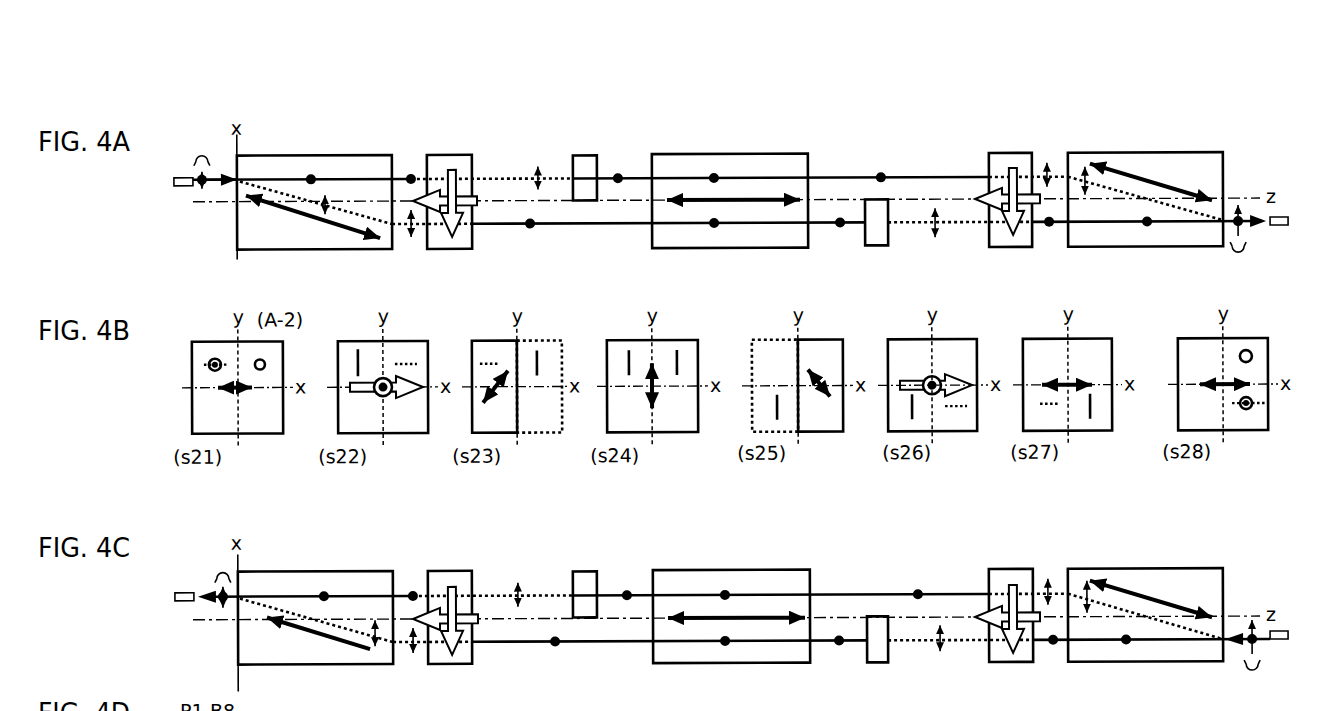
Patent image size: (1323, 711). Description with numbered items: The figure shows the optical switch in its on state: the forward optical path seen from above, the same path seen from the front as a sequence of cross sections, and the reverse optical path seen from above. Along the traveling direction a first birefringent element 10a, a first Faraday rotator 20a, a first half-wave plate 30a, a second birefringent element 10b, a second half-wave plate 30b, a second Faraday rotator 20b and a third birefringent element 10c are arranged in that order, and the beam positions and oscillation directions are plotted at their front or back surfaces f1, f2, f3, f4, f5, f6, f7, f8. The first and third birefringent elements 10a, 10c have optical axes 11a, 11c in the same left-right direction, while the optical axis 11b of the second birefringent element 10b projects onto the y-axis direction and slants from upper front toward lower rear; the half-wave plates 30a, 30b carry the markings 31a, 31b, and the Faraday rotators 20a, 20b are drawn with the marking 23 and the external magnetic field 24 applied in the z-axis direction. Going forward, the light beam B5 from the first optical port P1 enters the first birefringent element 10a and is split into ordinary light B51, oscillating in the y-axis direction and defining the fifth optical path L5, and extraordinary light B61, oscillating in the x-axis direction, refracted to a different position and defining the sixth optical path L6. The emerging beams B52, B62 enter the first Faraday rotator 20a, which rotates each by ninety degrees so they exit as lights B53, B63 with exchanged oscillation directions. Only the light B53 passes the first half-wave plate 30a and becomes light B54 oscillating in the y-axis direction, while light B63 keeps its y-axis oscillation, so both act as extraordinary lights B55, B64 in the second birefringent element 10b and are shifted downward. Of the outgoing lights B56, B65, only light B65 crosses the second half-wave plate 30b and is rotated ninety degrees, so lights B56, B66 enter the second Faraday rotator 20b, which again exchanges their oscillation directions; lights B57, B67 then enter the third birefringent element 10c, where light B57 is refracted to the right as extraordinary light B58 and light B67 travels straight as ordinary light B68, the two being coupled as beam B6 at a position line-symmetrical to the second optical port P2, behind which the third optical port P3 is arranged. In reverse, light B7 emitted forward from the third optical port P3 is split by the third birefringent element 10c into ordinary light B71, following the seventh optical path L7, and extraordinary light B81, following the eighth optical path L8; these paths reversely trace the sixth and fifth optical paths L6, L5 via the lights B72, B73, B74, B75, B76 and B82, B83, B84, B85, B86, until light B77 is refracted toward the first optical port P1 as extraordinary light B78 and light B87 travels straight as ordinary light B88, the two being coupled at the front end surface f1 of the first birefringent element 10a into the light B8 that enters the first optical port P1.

In FIG. 4A, the first birefringent element 10a is at (378, 164).
In FIG. 4B, the first birefringent element 10a is at (277, 433).
In FIG. 4C, the first birefringent element 10a is at (372, 578).
In FIG. 4A, the second birefringent element 10b is at (780, 163).
In FIG. 4B, the second birefringent element 10b is at (683, 433).
In FIG. 4C, the second birefringent element 10b is at (680, 578).
In FIG. 4A, the third birefringent element 10c is at (1144, 163).
In FIG. 4B, the third birefringent element 10c is at (1100, 433).
In FIG. 4C, the third birefringent element 10c is at (1158, 570).
In FIG. 4A, the optical axis of first birefringent element 11a is at (357, 240).
In FIG. 4B, the optical axis of first birefringent element 11a is at (246, 389).
In FIG. 4C, the optical axis of first birefringent element 11a is at (355, 650).
In FIG. 4A, the optical axis of second birefringent element 11b is at (748, 198).
In FIG. 4B, the optical axis of second birefringent element 11b is at (655, 397).
In FIG. 4C, the optical axis of second birefringent element 11b is at (700, 622).
In FIG. 4A, the optical axis of third birefringent element 11c is at (1180, 188).
In FIG. 4B, the optical axis of third birefringent element 11c is at (1072, 382).
In FIG. 4C, the optical axis of third birefringent element 11c is at (1100, 583).
In FIG. 4A, the first Faraday rotator 20a is at (463, 246).
In FIG. 4B, the first Faraday rotator 20a is at (417, 433).
In FIG. 4C, the first Faraday rotator 20a is at (463, 664).
In FIG. 4A, the second Faraday rotator 20b is at (1020, 246).
In FIG. 4B, the second Faraday rotator 20b is at (975, 433).
In FIG. 4C, the second Faraday rotator 20b is at (1000, 664).
In FIG. 4A, the magnetic field direction 23 is at (453, 168).
In FIG. 4B, the magnetic field direction 23 is at (398, 393).
In FIG. 4C, the magnetic field direction 23 is at (452, 585).
In FIG. 4A, the external magnetic field 24 is at (432, 196).
In FIG. 4B, the external magnetic field 24 is at (380, 376).
In FIG. 4C, the external magnetic field 24 is at (432, 612).
In FIG. 4A, the first half-wave plate 30a is at (588, 160).
In FIG. 4B, the first half-wave plate 30a is at (512, 433).
In FIG. 4C, the first half-wave plate 30a is at (587, 575).
In FIG. 4A, the second half-wave plate 30b is at (880, 208).
In FIG. 4B, the second half-wave plate 30b is at (838, 433).
In FIG. 4C, the second half-wave plate 30b is at (874, 615).
In FIG. 4B, the optical axis of first half-wave plate 31a is at (500, 366).
In FIG. 4B, the optical axis of second half-wave plate 31b is at (824, 378).
In FIG. 4A, the first optical port P1 is at (183, 186).
In FIG. 4B, the first optical port P1 is at (212, 360).
In FIG. 4C, the first optical port P1 is at (185, 590).
In FIG. 4B, the second optical port P2 is at (1248, 352).
In FIG. 4A, the third optical port P3 is at (1279, 229).
In FIG. 4B, the third optical port P3 is at (1250, 412).
In FIG. 4C, the third optical port P3 is at (1280, 632).
In FIG. 4A, the front end surface of first birefringent element f1 is at (236, 236).
In FIG. 4B, the front end surface of first birefringent element f1 is at (222, 420).
In FIG. 4C, the front end surface of first birefringent element f1 is at (236, 650).
In FIG. 4A, the surface of optical component f2 is at (426, 163).
In FIG. 4B, the surface of optical component f2 is at (368, 422).
In FIG. 4C, the surface of optical component f2 is at (427, 578).
In FIG. 4A, the surface of optical component f3 is at (572, 165).
In FIG. 4B, the surface of optical component f3 is at (483, 415).
In FIG. 4C, the surface of optical component f3 is at (572, 580).
In FIG. 4A, the surface of optical component f4 is at (651, 165).
In FIG. 4B, the surface of optical component f4 is at (620, 415).
In FIG. 4C, the surface of optical component f4 is at (652, 650).
In FIG. 4A, the surface of optical component f5 is at (864, 233).
In FIG. 4B, the surface of optical component f5 is at (825, 345).
In FIG. 4C, the surface of optical component f5 is at (866, 655).
In FIG. 4A, the surface of optical component f6 is at (988, 233).
In FIG. 4B, the surface of optical component f6 is at (905, 345).
In FIG. 4C, the surface of optical component f6 is at (988, 578).
In FIG. 4A, the surface of optical component f7 is at (1067, 165).
In FIG. 4B, the surface of optical component f7 is at (1048, 347).
In FIG. 4C, the surface of optical component f7 is at (1067, 578).
In FIG. 4A, the surface of optical component f8 is at (1224, 165).
In FIG. 4B, the surface of optical component f8 is at (1190, 405).
In FIG. 4C, the surface of optical component f8 is at (1224, 578).
In FIG. 4A, the fifth optical path L5 is at (502, 176).
In FIG. 4A, the sixth optical path L6 is at (580, 226).
In FIG. 4C, the seventh optical path L7 is at (580, 643).
In FIG. 4C, the eighth optical path L8 is at (500, 592).
In FIG. 4A, the light beam B5 is at (200, 156).
In FIG. 4B, the light beam B5 is at (215, 358).
In FIG. 4A, the light beam B6 is at (1238, 254).
In FIG. 4B, the light beam B6 is at (1260, 405).
In FIG. 4C, the light beam B7 is at (1252, 672).
In FIG. 4C, the coupled light B8 is at (221, 572).
In FIG. 4A, the ordinary light B51 is at (311, 173).
In FIG. 4A, the light beam B52 is at (411, 173).
In FIG. 4B, the light beam B52 is at (357, 358).
In FIG. 4A, the light B53 is at (538, 165).
In FIG. 4B, the light B53 is at (482, 360).
In FIG. 4A, the light B54 is at (618, 173).
In FIG. 4B, the light B54 is at (628, 352).
In FIG. 4A, the extraordinary light B55 is at (714, 173).
In FIG. 4A, the light B56 is at (881, 173).
In FIG. 4B, the light B56 is at (777, 396).
In FIG. 4A, the light B57 is at (1047, 163).
In FIG. 4B, the light B57 is at (1040, 405).
In FIG. 4A, the extraordinary light B58 is at (1085, 167).
In FIG. 4A, the extraordinary light B61 is at (326, 193).
In FIG. 4A, the light beam B62 is at (411, 238).
In FIG. 4B, the light beam B62 is at (408, 360).
In FIG. 4A, the light B63 is at (530, 228).
In FIG. 4B, the light B63 is at (540, 352).
In FIG. 4A, the extraordinary light B64 is at (714, 228).
In FIG. 4A, the light B65 is at (840, 227).
In FIG. 4B, the light B65 is at (822, 400).
In FIG. 4A, the light B66 is at (935, 239).
In FIG. 4B, the light B66 is at (955, 412).
In FIG. 4A, the light B67 is at (1049, 228).
In FIG. 4B, the light B67 is at (1092, 405).
In FIG. 4A, the ordinary light B68 is at (1147, 228).
In FIG. 4C, the ordinary light B71 is at (1126, 646).
In FIG. 4C, the light B72 is at (1053, 646).
In FIG. 4C, the light B73 is at (940, 653).
In FIG. 4C, the light B74 is at (839, 645).
In FIG. 4C, the light B75 is at (725, 646).
In FIG. 4C, the light B76 is at (554, 645).
In FIG. 4C, the light B77 is at (413, 654).
In FIG. 4C, the extraordinary light B78 is at (376, 647).
In FIG. 4C, the extraordinary light B81 is at (1087, 581).
In FIG. 4C, the light B82 is at (1048, 579).
In FIG. 4C, the light B83 is at (918, 590).
In FIG. 4C, the light B84 is at (725, 590).
In FIG. 4C, the light B85 is at (627, 590).
In FIG. 4C, the light B86 is at (518, 581).
In FIG. 4C, the light B87 is at (413, 590).
In FIG. 4C, the ordinary light B88 is at (324, 590).